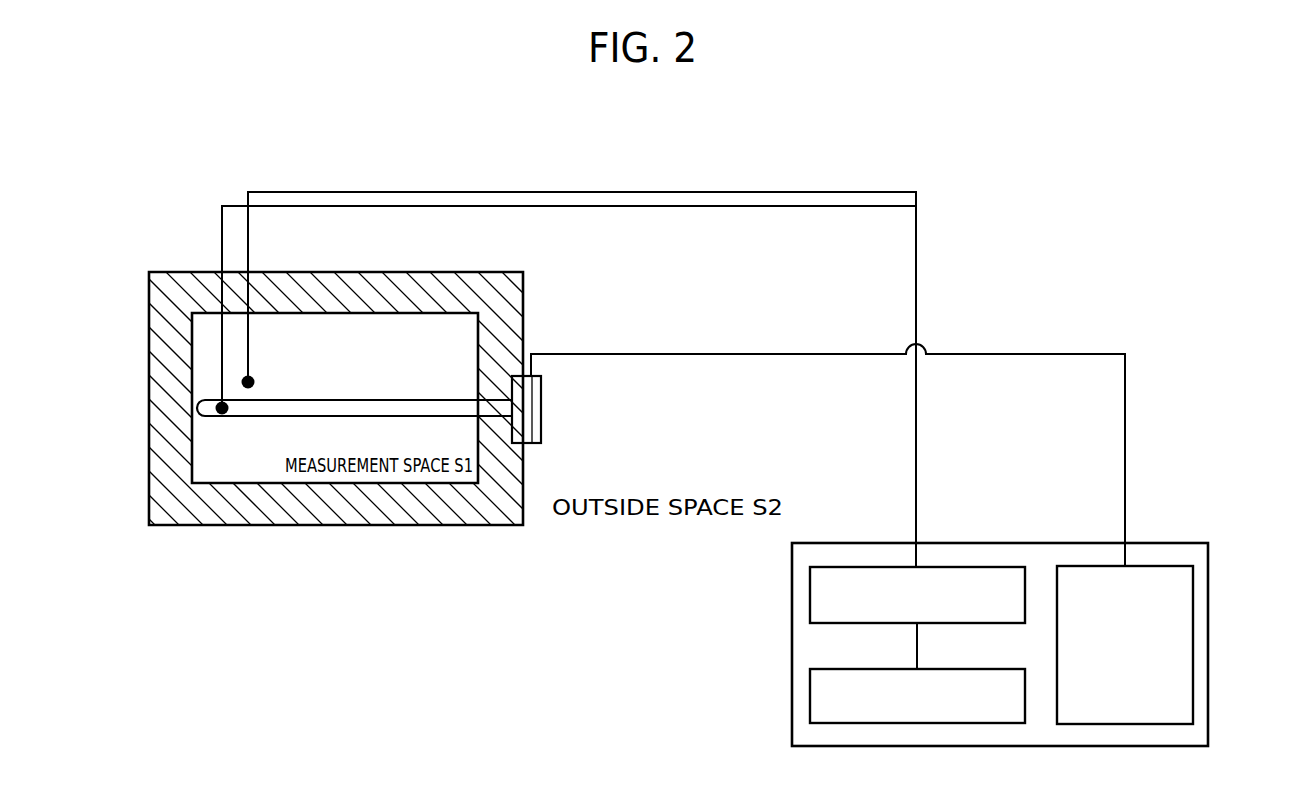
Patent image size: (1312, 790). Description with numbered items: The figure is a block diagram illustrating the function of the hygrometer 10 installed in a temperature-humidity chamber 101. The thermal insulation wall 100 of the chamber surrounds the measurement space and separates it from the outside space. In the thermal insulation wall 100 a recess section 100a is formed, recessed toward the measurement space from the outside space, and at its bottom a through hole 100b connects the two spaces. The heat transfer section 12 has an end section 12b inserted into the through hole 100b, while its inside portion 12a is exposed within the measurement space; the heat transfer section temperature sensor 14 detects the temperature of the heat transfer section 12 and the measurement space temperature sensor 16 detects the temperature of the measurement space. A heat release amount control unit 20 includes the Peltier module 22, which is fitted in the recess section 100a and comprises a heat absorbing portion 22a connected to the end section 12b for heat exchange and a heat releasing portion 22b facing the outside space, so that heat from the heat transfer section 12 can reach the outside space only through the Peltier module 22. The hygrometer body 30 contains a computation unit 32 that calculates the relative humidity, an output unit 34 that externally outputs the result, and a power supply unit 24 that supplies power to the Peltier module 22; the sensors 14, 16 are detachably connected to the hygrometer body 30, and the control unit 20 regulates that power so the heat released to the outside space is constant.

The hygrometer 10 is at (1005, 176).
The heat transfer section 12 is at (387, 393).
The inside portion 12a is at (313, 418).
The end section 12b is at (492, 400).
The heat transfer section temperature sensor 14 is at (224, 414).
The measurement space temperature sensor 16 is at (248, 382).
The heat release amount control unit 20 is at (670, 415).
The Peltier module 22 is at (577, 592).
The heat absorbing portion 22a is at (520, 445).
The heat releasing portion 22b is at (530, 445).
The power supply unit 24 is at (1193, 640).
The hygrometer body 30 is at (1214, 562).
The computation unit 32 is at (810, 592).
The output unit 34 is at (810, 693).
The thermal insulation wall 100 is at (405, 272).
The recess section 100a is at (523, 388).
The through hole 100b is at (513, 413).
The temperature-humidity chamber 101 is at (136, 344).